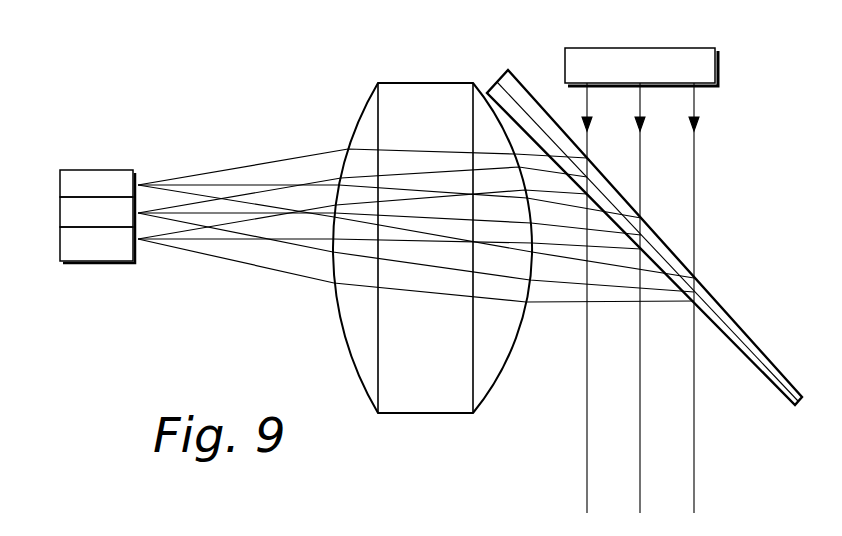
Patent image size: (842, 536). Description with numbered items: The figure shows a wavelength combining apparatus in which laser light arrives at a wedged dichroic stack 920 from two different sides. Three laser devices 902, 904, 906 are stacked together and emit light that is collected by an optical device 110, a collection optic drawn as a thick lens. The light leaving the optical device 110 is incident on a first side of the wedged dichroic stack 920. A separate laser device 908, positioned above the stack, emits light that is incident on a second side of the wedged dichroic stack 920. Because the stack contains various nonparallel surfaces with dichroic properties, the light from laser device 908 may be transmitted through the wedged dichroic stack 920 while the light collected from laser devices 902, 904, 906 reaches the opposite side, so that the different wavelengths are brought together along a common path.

The optical device 110 is at (400, 83).
The laser device 902 is at (88, 170).
The laser device 904 is at (60, 212).
The laser device 906 is at (90, 261).
The laser device 908 is at (692, 48).
The wedged dichroic stack 920 is at (722, 306).